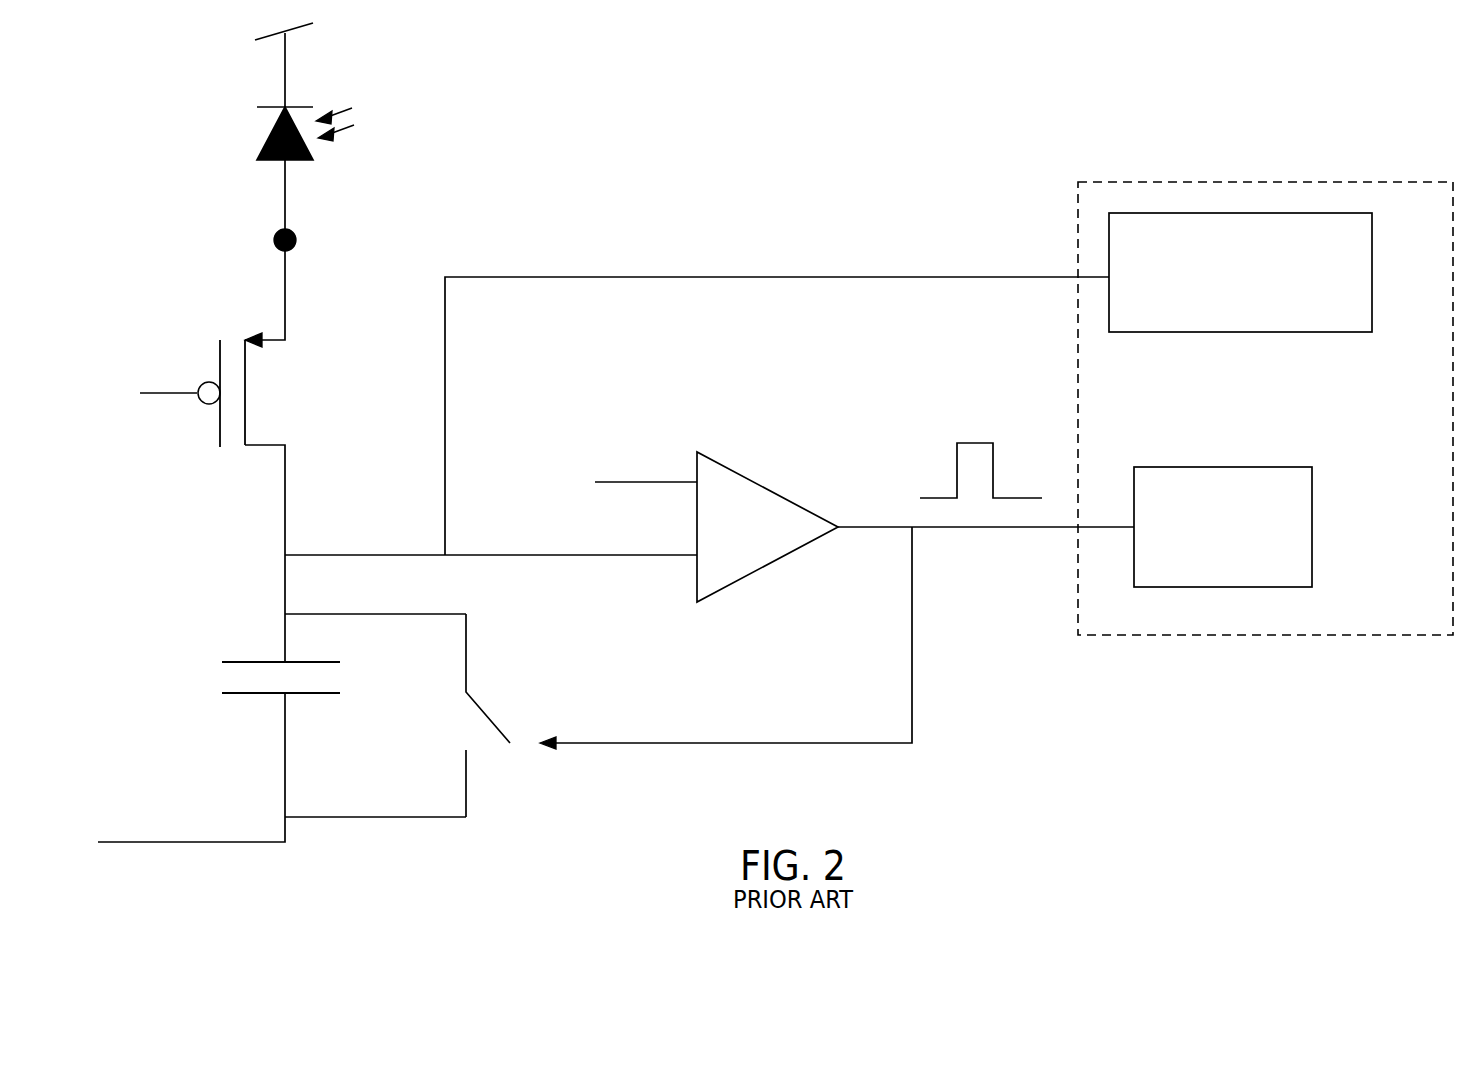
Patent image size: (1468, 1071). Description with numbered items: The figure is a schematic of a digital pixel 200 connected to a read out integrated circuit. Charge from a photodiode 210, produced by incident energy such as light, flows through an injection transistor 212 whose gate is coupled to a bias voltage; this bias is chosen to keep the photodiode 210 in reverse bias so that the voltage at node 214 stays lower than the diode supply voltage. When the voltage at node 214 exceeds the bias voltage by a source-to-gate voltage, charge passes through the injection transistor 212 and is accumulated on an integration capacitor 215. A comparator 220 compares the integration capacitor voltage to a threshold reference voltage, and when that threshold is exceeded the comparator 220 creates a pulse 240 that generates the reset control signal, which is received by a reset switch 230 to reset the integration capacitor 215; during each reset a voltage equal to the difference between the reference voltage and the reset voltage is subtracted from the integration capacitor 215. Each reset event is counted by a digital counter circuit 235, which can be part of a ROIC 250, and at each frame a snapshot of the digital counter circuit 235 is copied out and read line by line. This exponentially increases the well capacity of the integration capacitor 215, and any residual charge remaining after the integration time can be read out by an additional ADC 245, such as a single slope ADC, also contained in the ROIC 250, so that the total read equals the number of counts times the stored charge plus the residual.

The digital pixel 200 is at (845, 129).
The photodiode 210 is at (268, 138).
The injection transistor 212 is at (218, 361).
The node 214 is at (299, 232).
The integration capacitor 215 is at (249, 661).
The comparator 220 is at (775, 490).
The reset switch 230 is at (467, 771).
The digital counter circuit 235 is at (1242, 545).
The pulse 240 is at (975, 441).
The ADC 245 is at (722, 275).
The ROIC 250 is at (1349, 181).